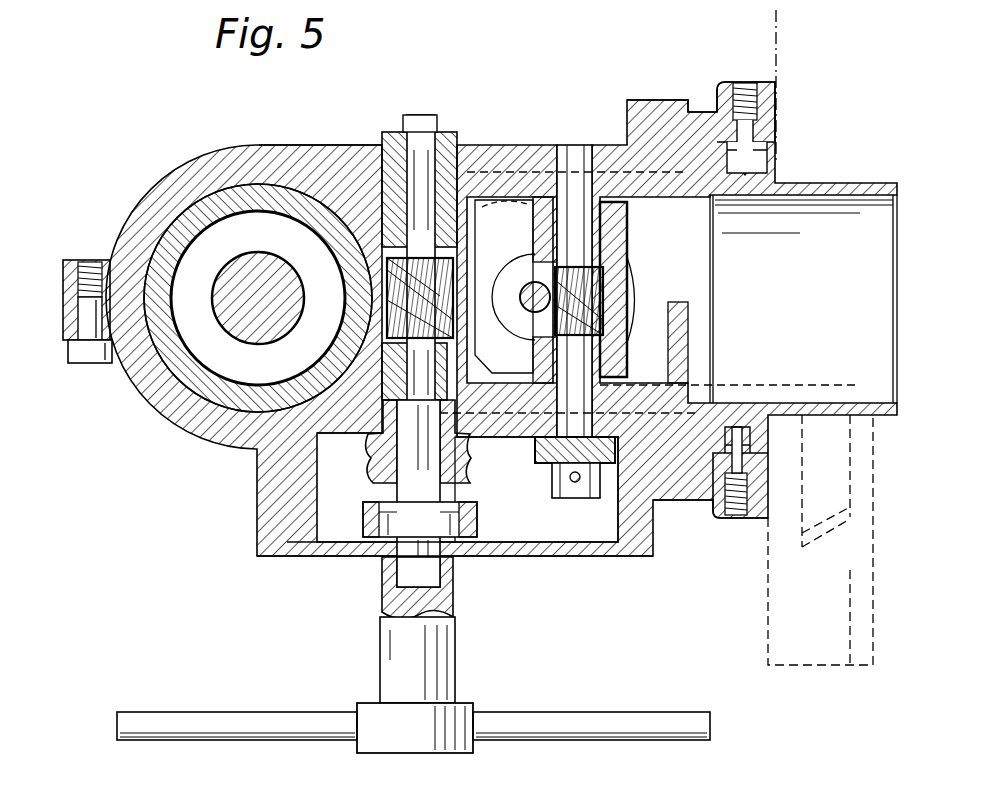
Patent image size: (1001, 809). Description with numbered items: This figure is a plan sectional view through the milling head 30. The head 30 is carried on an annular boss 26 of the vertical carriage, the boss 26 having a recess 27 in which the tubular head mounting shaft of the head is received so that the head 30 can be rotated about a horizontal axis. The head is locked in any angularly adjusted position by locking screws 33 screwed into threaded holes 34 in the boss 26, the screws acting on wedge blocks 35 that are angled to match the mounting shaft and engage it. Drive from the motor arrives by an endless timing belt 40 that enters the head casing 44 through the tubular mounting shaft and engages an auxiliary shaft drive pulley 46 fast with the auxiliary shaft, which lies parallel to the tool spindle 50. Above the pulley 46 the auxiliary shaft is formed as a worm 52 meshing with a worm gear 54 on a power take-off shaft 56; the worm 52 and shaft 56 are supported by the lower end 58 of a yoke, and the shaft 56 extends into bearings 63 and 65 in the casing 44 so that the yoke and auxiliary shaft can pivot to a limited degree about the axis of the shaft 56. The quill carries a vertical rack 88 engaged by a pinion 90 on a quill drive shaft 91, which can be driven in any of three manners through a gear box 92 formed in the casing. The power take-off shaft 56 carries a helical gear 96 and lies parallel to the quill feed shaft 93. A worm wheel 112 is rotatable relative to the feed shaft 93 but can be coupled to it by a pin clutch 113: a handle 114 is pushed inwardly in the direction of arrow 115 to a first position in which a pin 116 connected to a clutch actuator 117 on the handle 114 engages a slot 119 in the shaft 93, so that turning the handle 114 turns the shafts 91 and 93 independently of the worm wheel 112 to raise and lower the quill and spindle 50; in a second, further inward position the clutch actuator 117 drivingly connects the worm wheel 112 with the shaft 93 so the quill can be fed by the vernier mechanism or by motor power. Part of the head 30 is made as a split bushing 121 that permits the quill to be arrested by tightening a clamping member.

The boss 26 is at (717, 95).
The recess 27 is at (727, 437).
The milling head 30 is at (250, 505).
The locking screws 33 is at (767, 82).
The threaded holes 34 is at (760, 100).
The wedge blocks 35 is at (762, 138).
The endless timing belt 40 is at (730, 385).
The head casing 44 is at (324, 148).
The auxiliary shaft drive pulley 46 is at (636, 305).
The spindle 50 is at (258, 340).
The worm 52 is at (538, 330).
The worm gear 54 is at (600, 290).
The power take-off shaft 56 is at (573, 145).
The lower end of yoke 58 is at (625, 237).
The bearing 63 is at (548, 155).
The bearing 65 is at (540, 437).
The rack 88 is at (385, 272).
The pinion 90 is at (405, 325).
The quill drive shaft 91 is at (388, 380).
The gear box 92 is at (540, 560).
The quill feed shaft 93 is at (432, 460).
The helical gear 96 is at (598, 467).
The worm wheel 112 is at (369, 460).
The pin clutch 113 is at (372, 500).
The handle 114 is at (640, 712).
The arrow 115 is at (358, 626).
The pin 116 is at (413, 530).
The clutch actuator 117 is at (360, 530).
The slot 119 is at (457, 500).
The split bushing 121 is at (55, 277).